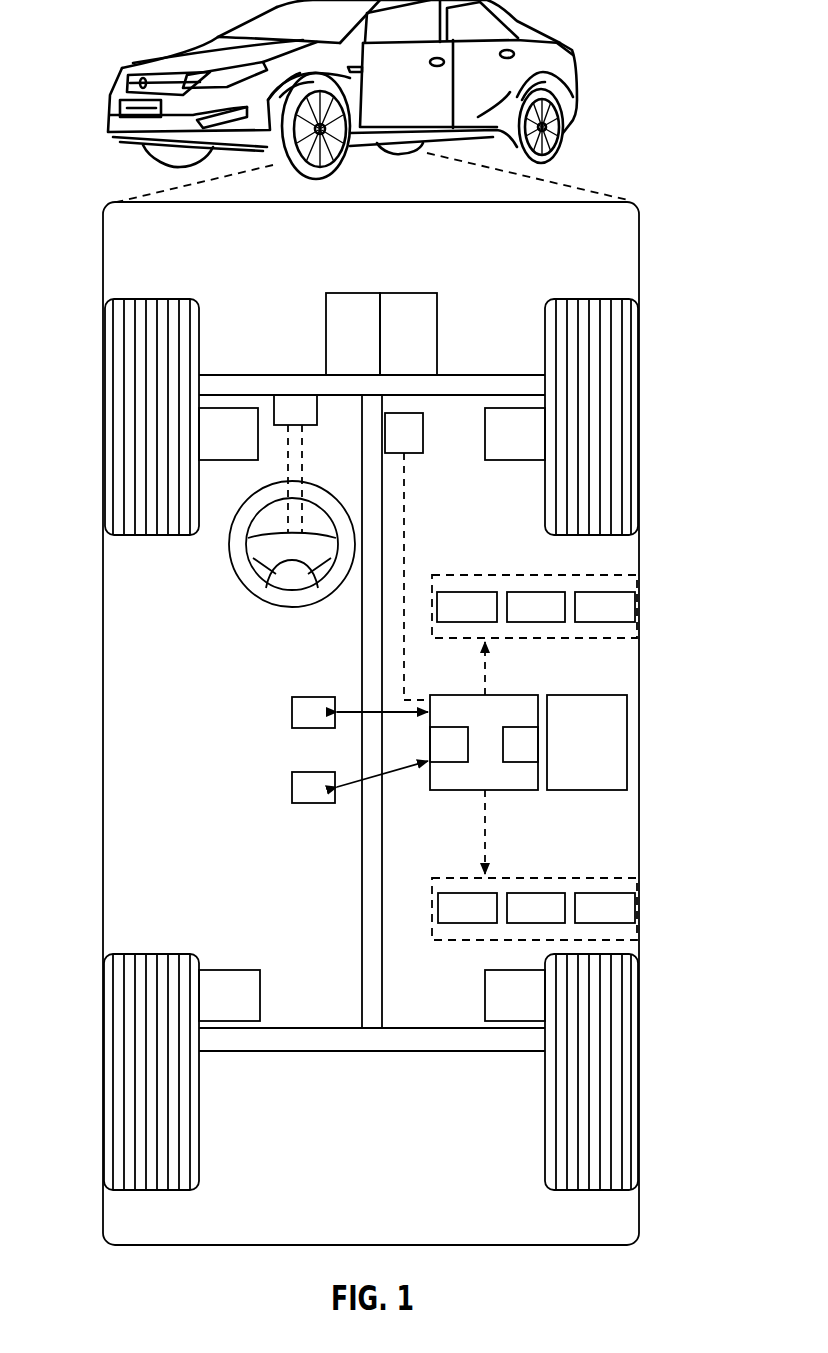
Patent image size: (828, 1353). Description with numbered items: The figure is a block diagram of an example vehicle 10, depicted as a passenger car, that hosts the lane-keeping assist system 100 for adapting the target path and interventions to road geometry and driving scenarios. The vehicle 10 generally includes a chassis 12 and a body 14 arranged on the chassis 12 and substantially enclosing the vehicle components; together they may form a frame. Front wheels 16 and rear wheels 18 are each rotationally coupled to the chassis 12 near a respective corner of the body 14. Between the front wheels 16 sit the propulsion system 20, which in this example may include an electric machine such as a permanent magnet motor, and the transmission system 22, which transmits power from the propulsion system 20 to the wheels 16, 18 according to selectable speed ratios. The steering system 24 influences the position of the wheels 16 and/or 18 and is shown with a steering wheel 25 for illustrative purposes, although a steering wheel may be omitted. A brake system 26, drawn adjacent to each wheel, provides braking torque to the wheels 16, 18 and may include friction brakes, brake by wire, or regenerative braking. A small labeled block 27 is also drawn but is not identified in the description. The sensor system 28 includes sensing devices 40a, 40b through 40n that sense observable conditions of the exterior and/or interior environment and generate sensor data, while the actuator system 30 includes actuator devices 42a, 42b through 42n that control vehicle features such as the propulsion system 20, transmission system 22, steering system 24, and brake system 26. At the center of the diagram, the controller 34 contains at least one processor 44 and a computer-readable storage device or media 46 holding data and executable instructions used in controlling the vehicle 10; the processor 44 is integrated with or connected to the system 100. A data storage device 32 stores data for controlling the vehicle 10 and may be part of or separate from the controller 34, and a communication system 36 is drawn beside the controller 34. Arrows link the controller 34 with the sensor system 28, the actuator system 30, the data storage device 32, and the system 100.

The vehicle 10 is at (120, 72).
The chassis 12 is at (372, 1051).
The body 14 is at (103, 617).
The front wheels 16 is at (118, 372).
The rear wheels 18 is at (118, 1090).
The propulsion system 20 is at (333, 333).
The transmission system 22 is at (418, 332).
The steering system 24 is at (247, 604).
The steering wheel 25 is at (297, 602).
The brake system 26 is at (240, 443).
The communication bus 27 is at (419, 448).
The sensor system 28 is at (478, 575).
The actuator system 30 is at (578, 877).
The data storage device 32 is at (305, 715).
The controller 34 is at (446, 708).
The communication system 36 is at (578, 708).
The sensing device 40a is at (450, 600).
The sensing device 40b is at (522, 605).
The sensing device 40n is at (622, 610).
The actuator device 42a is at (458, 900).
The actuator device 42b is at (543, 900).
The actuator device 42n is at (622, 912).
The processor 44 is at (440, 745).
The computer-readable storage device or media 46 is at (514, 740).
The lane-keeping assist system 100 is at (305, 790).